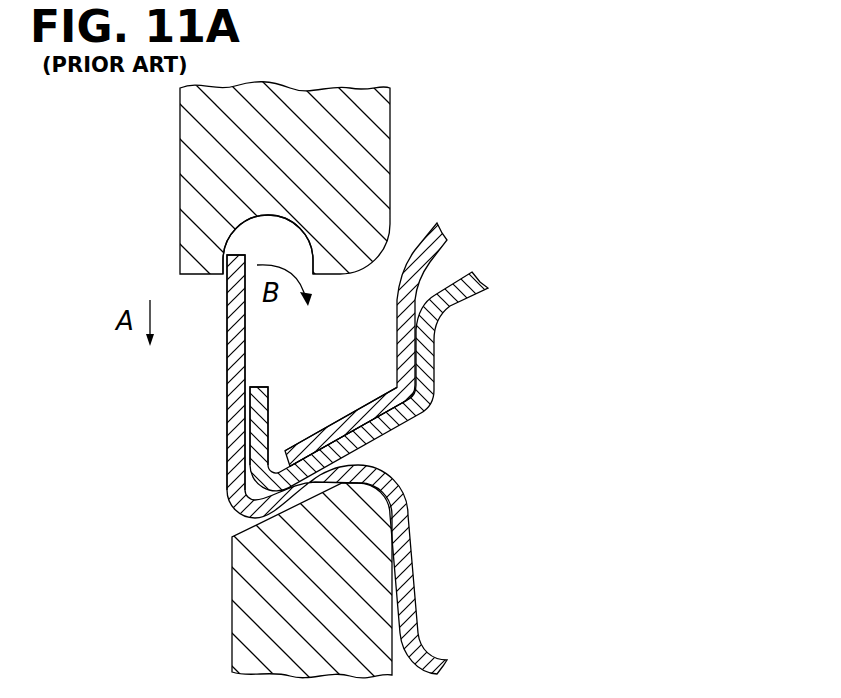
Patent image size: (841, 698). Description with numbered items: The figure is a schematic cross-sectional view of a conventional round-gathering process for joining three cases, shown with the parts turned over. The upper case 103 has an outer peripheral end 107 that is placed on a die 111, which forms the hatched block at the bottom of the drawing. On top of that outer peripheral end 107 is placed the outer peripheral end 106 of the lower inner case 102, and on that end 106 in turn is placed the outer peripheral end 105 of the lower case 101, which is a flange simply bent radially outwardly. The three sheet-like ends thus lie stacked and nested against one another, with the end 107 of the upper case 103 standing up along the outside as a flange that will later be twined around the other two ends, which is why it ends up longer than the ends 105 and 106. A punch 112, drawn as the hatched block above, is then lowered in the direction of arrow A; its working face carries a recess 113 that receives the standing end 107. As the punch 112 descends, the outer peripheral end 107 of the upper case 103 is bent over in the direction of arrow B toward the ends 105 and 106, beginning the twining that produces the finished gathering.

The lower case 101 is at (435, 253).
The lower inner case 102 is at (415, 407).
The upper case 103 is at (413, 573).
The outer peripheral end 105 is at (346, 430).
The outer peripheral end 106 is at (258, 423).
The outer peripheral end 107 is at (225, 360).
The die 111 is at (252, 608).
The punch 112 is at (192, 168).
The groove 113 is at (252, 240).